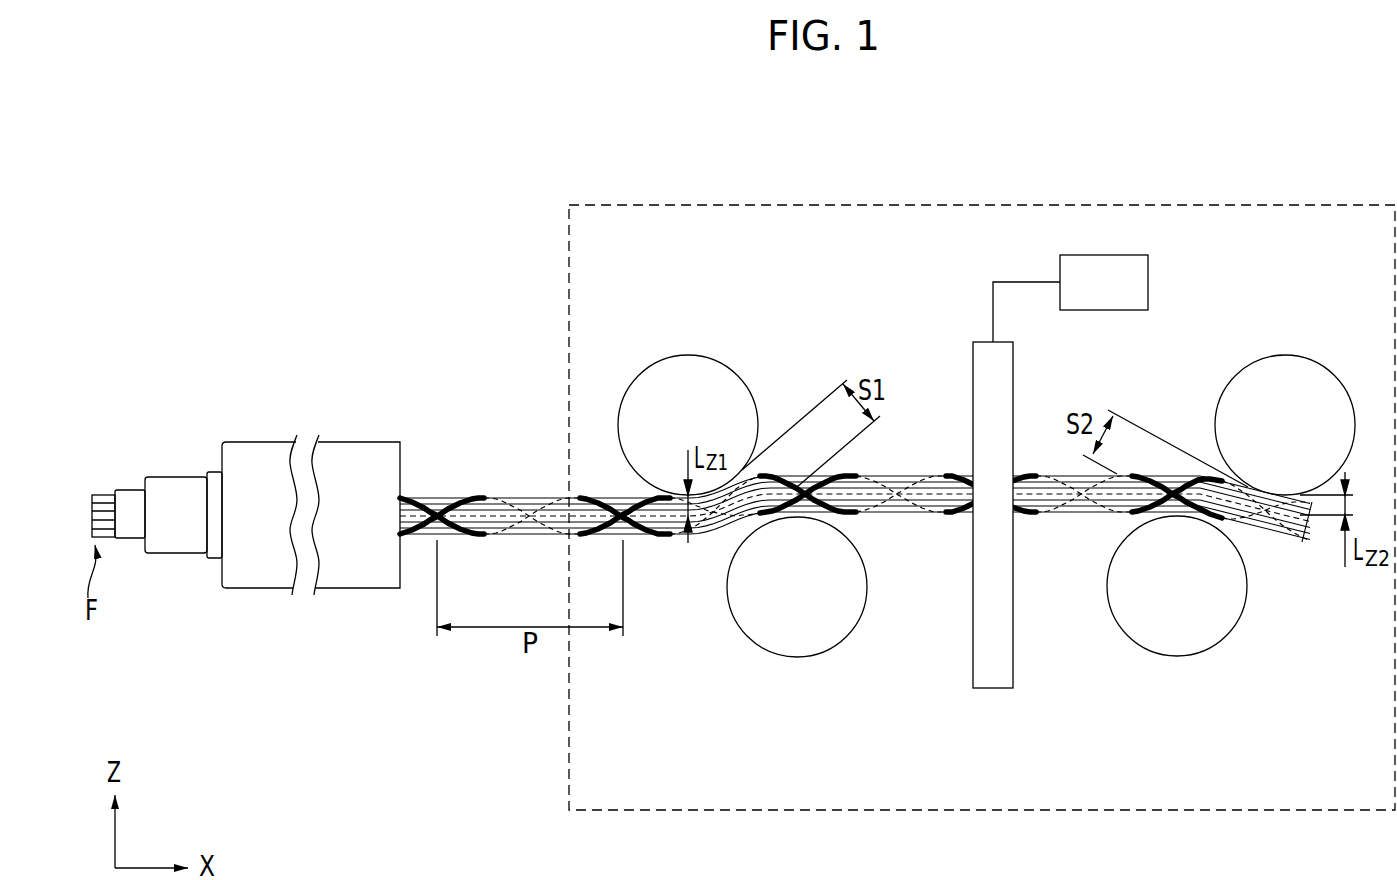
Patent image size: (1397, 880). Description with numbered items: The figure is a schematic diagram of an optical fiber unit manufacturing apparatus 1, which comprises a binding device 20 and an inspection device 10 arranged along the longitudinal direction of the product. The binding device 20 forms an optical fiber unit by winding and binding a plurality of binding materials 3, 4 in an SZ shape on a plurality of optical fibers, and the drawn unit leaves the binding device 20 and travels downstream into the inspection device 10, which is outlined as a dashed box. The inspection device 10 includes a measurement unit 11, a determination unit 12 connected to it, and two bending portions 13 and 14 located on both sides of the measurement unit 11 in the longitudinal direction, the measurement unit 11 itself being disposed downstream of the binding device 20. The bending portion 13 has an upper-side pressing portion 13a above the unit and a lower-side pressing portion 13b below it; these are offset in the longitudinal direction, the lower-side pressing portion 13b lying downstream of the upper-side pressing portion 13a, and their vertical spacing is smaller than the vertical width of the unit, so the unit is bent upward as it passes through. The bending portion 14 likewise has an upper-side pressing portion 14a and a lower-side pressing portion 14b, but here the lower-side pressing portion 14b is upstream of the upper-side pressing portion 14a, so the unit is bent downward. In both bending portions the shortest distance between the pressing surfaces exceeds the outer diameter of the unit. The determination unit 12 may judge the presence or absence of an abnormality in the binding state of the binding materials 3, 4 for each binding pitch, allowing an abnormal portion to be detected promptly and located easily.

The manufacturing apparatus 1 is at (184, 240).
The binding material 3 is at (466, 494).
The binding material 4 is at (462, 538).
The inspection device 10 is at (650, 205).
The measurement unit 11 is at (990, 690).
The determination unit 12 is at (1130, 255).
The bending portion 13 is at (742, 483).
The upper-side pressing portion 13a is at (704, 354).
The lower-side pressing portion 13b is at (768, 646).
The bending portion 14 is at (1243, 487).
The upper-side pressing portion 14a is at (1284, 354).
The lower-side pressing portion 14b is at (1190, 658).
The binding device 20 is at (256, 438).